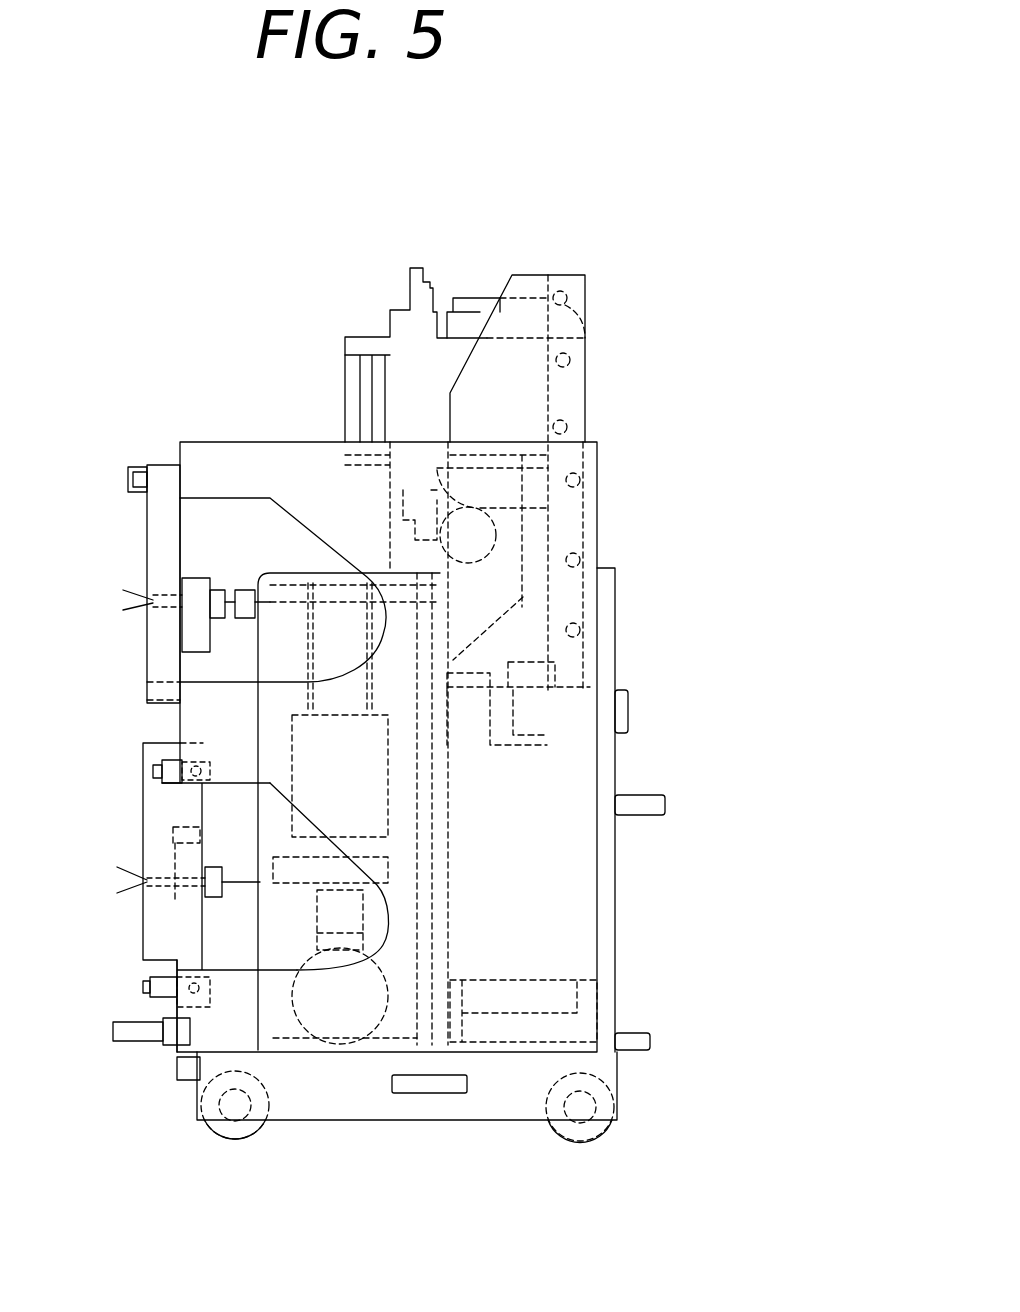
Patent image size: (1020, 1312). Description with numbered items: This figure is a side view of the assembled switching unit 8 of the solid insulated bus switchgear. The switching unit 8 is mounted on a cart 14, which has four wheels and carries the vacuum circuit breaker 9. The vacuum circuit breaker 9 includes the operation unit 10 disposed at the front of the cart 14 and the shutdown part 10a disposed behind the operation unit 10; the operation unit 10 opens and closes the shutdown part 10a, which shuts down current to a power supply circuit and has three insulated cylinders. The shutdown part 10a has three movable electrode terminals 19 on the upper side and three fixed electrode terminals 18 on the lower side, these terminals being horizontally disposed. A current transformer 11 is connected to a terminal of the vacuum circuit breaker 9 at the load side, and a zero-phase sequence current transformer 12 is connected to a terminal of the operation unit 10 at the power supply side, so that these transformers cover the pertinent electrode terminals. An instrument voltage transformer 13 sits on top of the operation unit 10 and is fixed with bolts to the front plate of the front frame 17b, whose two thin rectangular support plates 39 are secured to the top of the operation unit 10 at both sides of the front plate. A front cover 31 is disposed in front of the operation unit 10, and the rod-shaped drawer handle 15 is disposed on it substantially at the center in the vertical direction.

The switching unit 8 is at (643, 1156).
The vacuum circuit breaker 9 is at (462, 616).
The operation unit 10 is at (555, 908).
The shutdown part 10a is at (280, 955).
The current transformer 11 is at (157, 465).
The zero-phase sequence current transformer 12 is at (160, 950).
The instrument voltage transformer 13 is at (460, 274).
The cart 14 is at (518, 1087).
The rod-shaped drawer handle 15 is at (665, 800).
The front frame 17b is at (587, 295).
The fixed electrode terminals 18 is at (238, 893).
The movable electrode terminals 19 is at (227, 618).
The front cover 31 is at (617, 748).
The support plates 39 is at (540, 534).